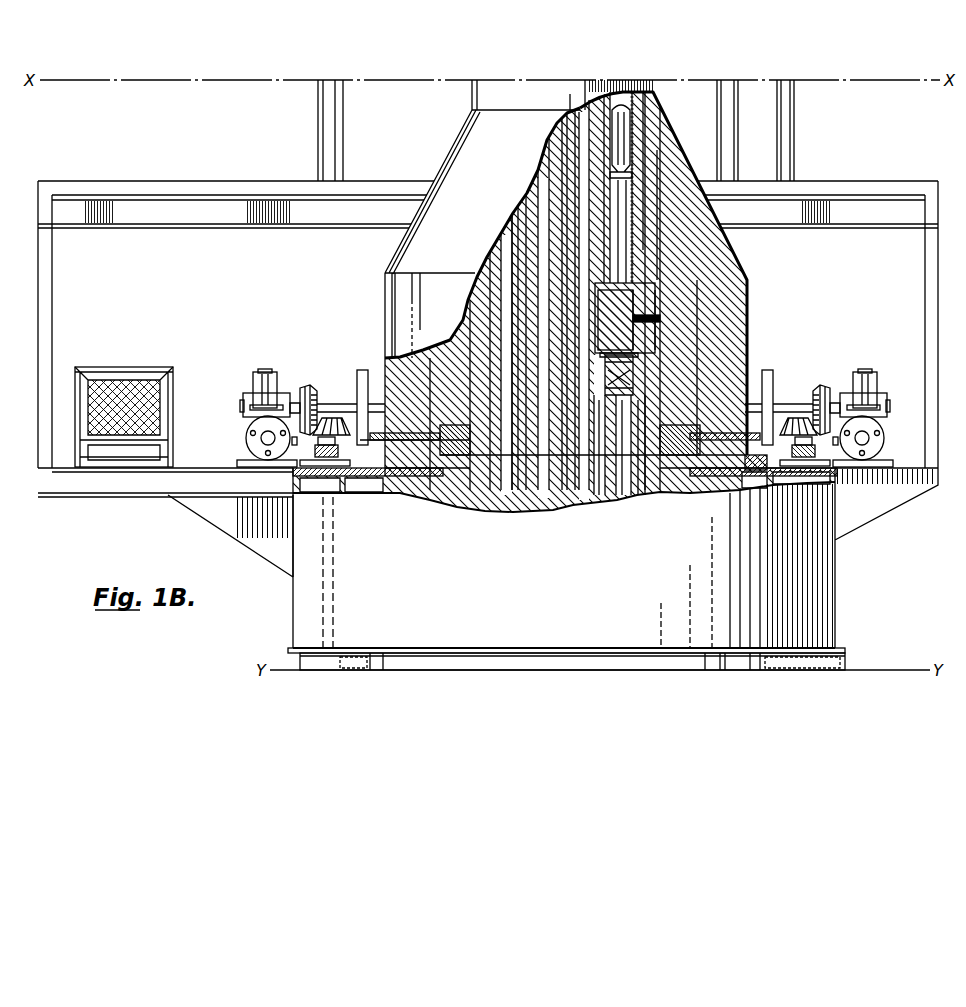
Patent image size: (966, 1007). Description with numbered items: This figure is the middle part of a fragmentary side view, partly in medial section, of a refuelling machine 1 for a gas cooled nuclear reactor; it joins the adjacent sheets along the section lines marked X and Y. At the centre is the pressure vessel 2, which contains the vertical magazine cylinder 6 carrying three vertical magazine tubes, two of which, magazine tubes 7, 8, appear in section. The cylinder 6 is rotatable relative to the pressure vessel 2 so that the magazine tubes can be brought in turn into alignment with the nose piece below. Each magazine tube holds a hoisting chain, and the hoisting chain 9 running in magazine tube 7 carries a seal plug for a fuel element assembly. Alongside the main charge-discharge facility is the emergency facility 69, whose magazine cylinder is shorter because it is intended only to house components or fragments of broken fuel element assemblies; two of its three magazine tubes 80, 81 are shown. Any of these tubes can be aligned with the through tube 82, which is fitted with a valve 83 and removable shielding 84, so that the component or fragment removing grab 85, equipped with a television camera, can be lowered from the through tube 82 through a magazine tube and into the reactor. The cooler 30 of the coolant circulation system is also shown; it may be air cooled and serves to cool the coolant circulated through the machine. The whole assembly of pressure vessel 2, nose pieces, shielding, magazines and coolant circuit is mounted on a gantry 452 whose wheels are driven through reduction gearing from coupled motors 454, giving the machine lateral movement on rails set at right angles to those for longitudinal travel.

The refuelling machine 1 is at (383, 307).
The pressure vessel 2 is at (560, 175).
The magazine cylinder 6 is at (527, 202).
The magazine tube 7 is at (518, 222).
The magazine tube 8 is at (548, 157).
The hoisting chain 9 is at (512, 242).
The cooler 30 is at (160, 405).
The emergency facility 69 is at (639, 500).
The magazine tube 80 is at (598, 500).
The magazine tube 81 is at (622, 495).
The through tube 82 is at (620, 252).
The valve 83 is at (625, 375).
The removable shielding 84 is at (613, 336).
The grab 85 is at (622, 148).
The gantry 452 is at (95, 487).
The coupled motors 454 is at (246, 443).